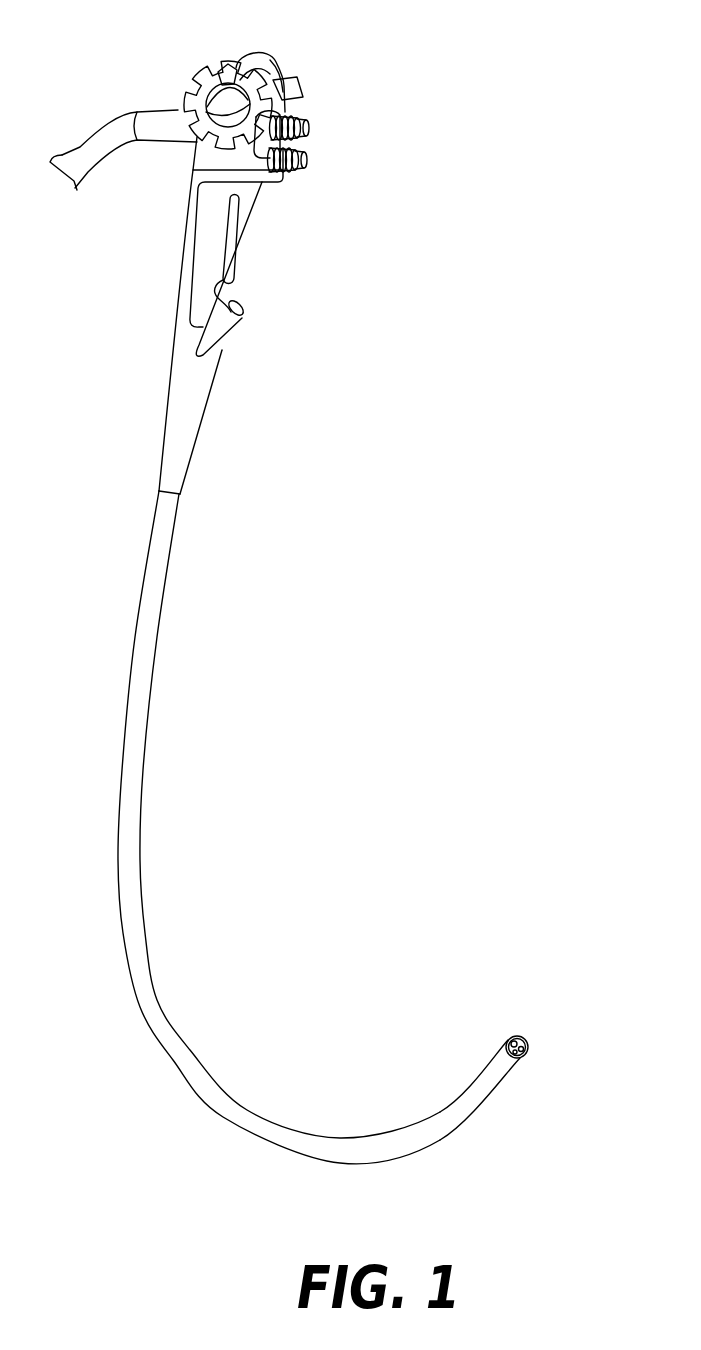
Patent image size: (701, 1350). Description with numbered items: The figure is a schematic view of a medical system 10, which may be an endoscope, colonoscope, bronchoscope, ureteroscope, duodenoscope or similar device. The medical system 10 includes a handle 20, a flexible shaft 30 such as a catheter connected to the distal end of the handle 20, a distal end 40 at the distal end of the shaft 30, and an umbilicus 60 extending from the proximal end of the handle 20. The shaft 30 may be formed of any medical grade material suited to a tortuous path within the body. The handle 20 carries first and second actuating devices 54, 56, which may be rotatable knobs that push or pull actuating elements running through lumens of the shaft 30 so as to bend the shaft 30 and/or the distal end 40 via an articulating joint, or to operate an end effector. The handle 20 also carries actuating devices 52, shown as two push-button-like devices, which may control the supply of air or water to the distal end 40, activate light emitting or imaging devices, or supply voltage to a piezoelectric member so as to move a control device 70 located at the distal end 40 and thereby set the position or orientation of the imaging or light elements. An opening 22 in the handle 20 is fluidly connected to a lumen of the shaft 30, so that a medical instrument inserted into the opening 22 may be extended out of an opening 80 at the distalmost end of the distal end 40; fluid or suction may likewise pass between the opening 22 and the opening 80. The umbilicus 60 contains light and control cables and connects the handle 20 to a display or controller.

The medical system 10 is at (124, 420).
The handle 20 is at (156, 292).
The opening 22 is at (241, 316).
The shaft 30 is at (157, 837).
The distal end 40 is at (480, 1098).
The actuating devices 52 is at (306, 160).
The first actuating device 54 is at (242, 78).
The second actuating device 56 is at (225, 68).
The umbilicus 60 is at (112, 130).
The control device 70 is at (530, 1048).
The opening 80 is at (521, 1064).